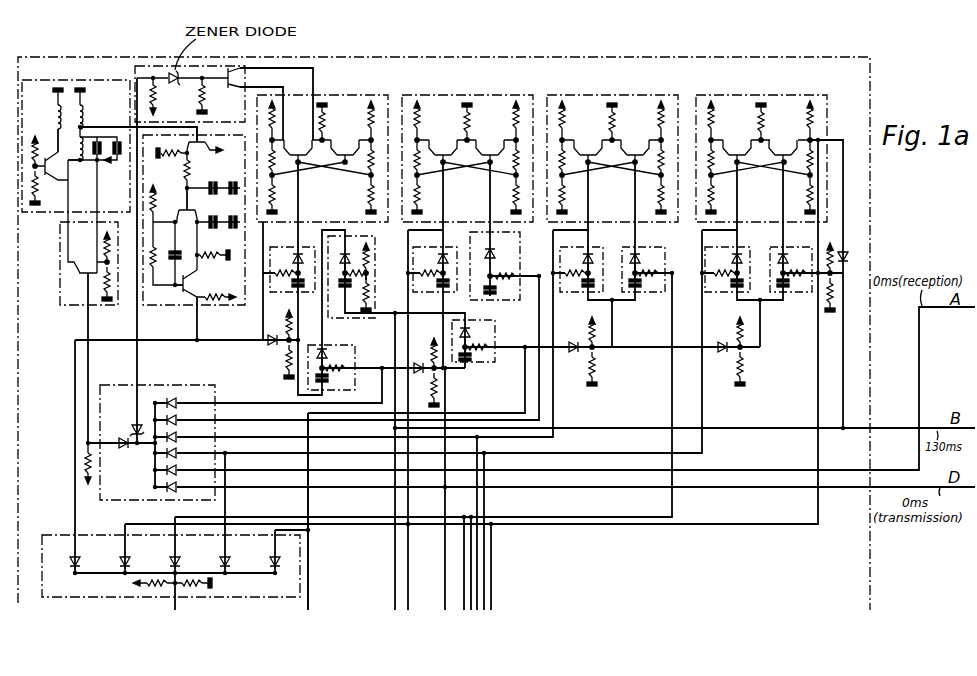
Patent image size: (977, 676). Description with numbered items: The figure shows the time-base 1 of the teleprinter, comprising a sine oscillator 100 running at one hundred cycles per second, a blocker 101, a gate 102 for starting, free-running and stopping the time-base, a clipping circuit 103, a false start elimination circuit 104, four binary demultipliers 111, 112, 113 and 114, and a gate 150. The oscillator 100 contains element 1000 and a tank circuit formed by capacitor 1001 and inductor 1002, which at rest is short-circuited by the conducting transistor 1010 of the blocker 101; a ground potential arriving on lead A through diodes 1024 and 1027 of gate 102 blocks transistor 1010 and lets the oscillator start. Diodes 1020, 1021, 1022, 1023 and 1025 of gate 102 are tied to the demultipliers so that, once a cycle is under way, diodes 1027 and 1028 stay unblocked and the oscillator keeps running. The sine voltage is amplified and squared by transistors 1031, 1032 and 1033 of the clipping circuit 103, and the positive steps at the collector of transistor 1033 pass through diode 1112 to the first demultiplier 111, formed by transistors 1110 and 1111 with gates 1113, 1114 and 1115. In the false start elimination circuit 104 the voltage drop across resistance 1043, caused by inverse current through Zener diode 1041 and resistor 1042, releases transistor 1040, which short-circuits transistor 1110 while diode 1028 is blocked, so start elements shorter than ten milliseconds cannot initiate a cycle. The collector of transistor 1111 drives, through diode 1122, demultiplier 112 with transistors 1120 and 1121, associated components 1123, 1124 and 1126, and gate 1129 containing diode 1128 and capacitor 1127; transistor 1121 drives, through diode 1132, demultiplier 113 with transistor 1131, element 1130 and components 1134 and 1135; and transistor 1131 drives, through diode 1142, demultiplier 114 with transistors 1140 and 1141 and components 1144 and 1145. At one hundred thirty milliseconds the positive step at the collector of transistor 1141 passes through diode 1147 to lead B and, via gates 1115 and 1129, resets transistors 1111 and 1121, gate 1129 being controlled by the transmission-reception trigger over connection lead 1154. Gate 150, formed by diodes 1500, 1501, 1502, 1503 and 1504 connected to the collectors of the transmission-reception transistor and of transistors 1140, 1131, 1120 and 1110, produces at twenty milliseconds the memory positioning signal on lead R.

The time-base 1 is at (865, 329).
The sine oscillator 100 is at (40, 81).
The blocker 101 is at (104, 304).
The gate 102 is at (110, 385).
The clipping circuit 103 is at (159, 304).
The false start elimination circuit 104 is at (138, 71).
The binary demultiplier 111 is at (346, 94).
The binary demultiplier 112 is at (458, 94).
The binary demultiplier 113 is at (603, 94).
The binary demultiplier 114 is at (754, 94).
The gate 150 is at (46, 535).
The input transistor 1000 is at (50, 176).
The capacitor 1001 is at (103, 164).
The inductor 1002 is at (74, 166).
The transistor 1010 is at (83, 262).
The diode 1020 is at (178, 403).
The diode 1021 is at (178, 420).
The diode 1022 is at (178, 437).
The diode 1023 is at (178, 453).
The diode 1024 is at (178, 470).
The matrix diode 1025 is at (178, 487).
The diode 1027 is at (122, 449).
The diode 1028 is at (132, 426).
The amplifying transistor 1031 is at (196, 155).
The amplifying transistor 1032 is at (193, 213).
The amplifying transistor 1033 is at (197, 286).
The transistor 1040 is at (222, 78).
The Zener diode 1041 is at (176, 82).
The resistor 1042 is at (156, 104).
The resistance 1043 is at (206, 99).
The transistor 1110 is at (297, 141).
The transistor 1111 is at (346, 141).
The diode 1112 is at (270, 347).
The gate 1113 is at (355, 363).
The gate 1114 is at (279, 247).
The gate 1115 is at (340, 318).
The transistor 1120 is at (442, 141).
The transistor 1121 is at (491, 141).
The diode 1122 is at (419, 357).
The steering network 1123 is at (487, 362).
The steering network 1124 is at (424, 247).
The resistor 1126 is at (501, 268).
The capacitor 1127 is at (499, 292).
The diode 1128 is at (500, 250).
The gate 1129 is at (507, 310).
The flip-flop transistor 1130 is at (587, 141).
The transistor 1131 is at (636, 141).
The diode 1132 is at (570, 342).
The steering network 1134 is at (569, 247).
The steering network 1135 is at (650, 247).
The transistor 1140 is at (736, 141).
The transistor 1141 is at (784, 141).
The diode 1142 is at (719, 342).
The steering network 1144 is at (716, 247).
The steering network 1145 is at (797, 247).
The diode 1147 is at (845, 252).
The connection lead 1154 is at (309, 560).
The diode 1500 is at (271, 559).
The diode 1501 is at (222, 559).
The diode 1502 is at (172, 559).
The diode 1503 is at (123, 559).
The diode 1504 is at (73, 559).